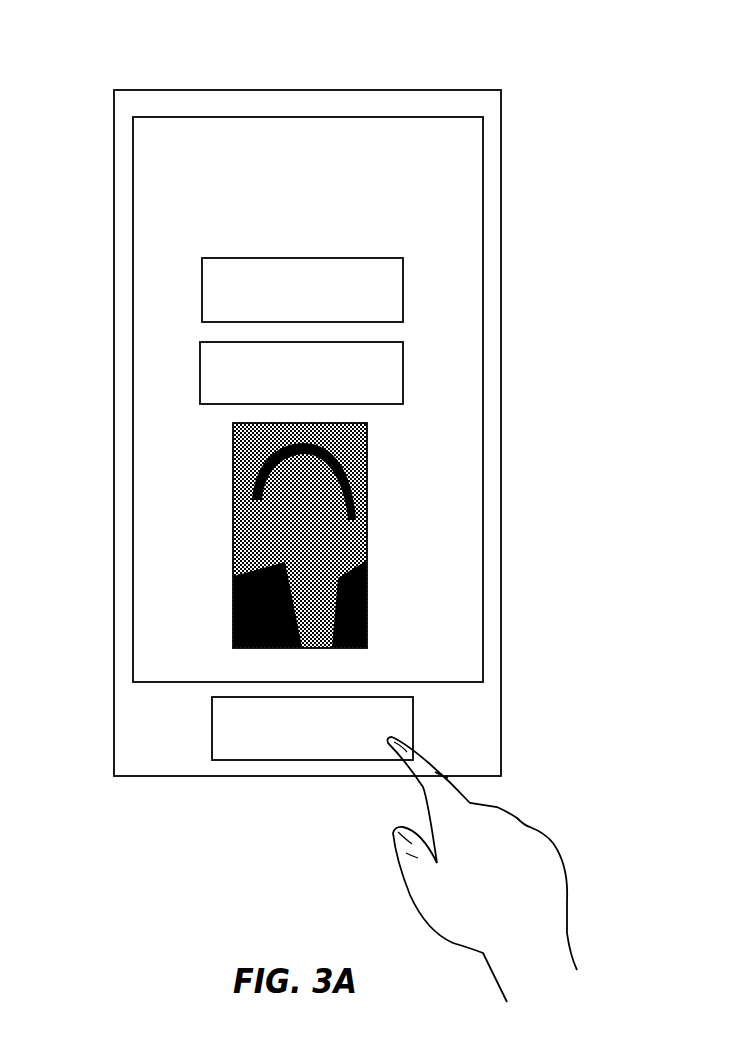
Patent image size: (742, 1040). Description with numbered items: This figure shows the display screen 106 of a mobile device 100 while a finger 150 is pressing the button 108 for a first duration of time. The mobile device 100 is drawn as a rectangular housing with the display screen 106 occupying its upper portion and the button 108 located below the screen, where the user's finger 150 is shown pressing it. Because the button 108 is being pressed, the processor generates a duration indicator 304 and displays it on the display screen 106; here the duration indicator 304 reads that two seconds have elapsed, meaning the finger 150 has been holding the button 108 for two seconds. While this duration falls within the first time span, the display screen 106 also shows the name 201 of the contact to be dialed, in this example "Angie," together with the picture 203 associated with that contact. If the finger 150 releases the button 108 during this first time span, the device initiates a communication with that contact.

The mobile device 100 is at (501, 125).
The display screen 106 is at (483, 198).
The duration indicator 304 is at (403, 293).
The name 201 is at (403, 377).
The picture 203 is at (367, 535).
The button 108 is at (363, 739).
The finger 150 is at (430, 758).